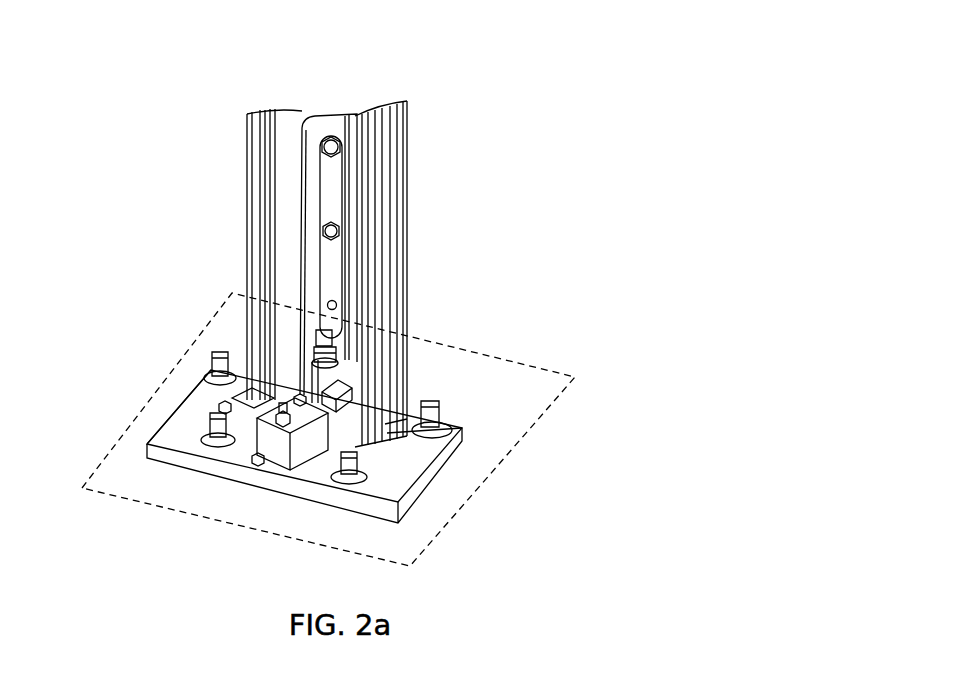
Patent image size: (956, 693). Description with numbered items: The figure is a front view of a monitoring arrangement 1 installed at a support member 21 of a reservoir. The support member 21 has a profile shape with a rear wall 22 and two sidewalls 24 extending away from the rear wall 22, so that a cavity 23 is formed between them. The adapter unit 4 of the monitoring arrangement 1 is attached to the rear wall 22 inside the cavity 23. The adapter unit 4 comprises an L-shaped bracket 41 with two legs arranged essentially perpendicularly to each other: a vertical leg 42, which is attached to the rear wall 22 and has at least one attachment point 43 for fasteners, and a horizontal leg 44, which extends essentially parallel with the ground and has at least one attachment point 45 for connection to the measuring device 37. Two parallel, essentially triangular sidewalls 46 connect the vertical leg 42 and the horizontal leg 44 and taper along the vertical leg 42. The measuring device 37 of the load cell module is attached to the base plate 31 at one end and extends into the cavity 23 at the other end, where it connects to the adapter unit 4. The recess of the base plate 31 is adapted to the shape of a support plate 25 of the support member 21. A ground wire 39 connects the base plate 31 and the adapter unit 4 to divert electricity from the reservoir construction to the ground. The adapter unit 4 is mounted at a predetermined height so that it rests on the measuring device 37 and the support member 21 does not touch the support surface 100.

The monitoring arrangement 1 is at (507, 222).
The adapter unit 4 is at (302, 287).
The support member 21 is at (357, 246).
The rear wall 22 is at (308, 246).
The cavity 23 is at (298, 120).
The sidewalls 24 is at (291, 178).
The support plate 25 is at (405, 408).
The base plate 31 is at (173, 438).
The measuring device 37 is at (300, 455).
The ground wire 39 is at (257, 407).
The bracket 41 is at (328, 258).
The vertical leg 42 is at (324, 121).
The attachment point 43 is at (337, 230).
The horizontal leg 44 is at (327, 380).
The attachment point 45 is at (327, 360).
The sidewalls 46 is at (308, 270).
The support surface 100 is at (517, 418).